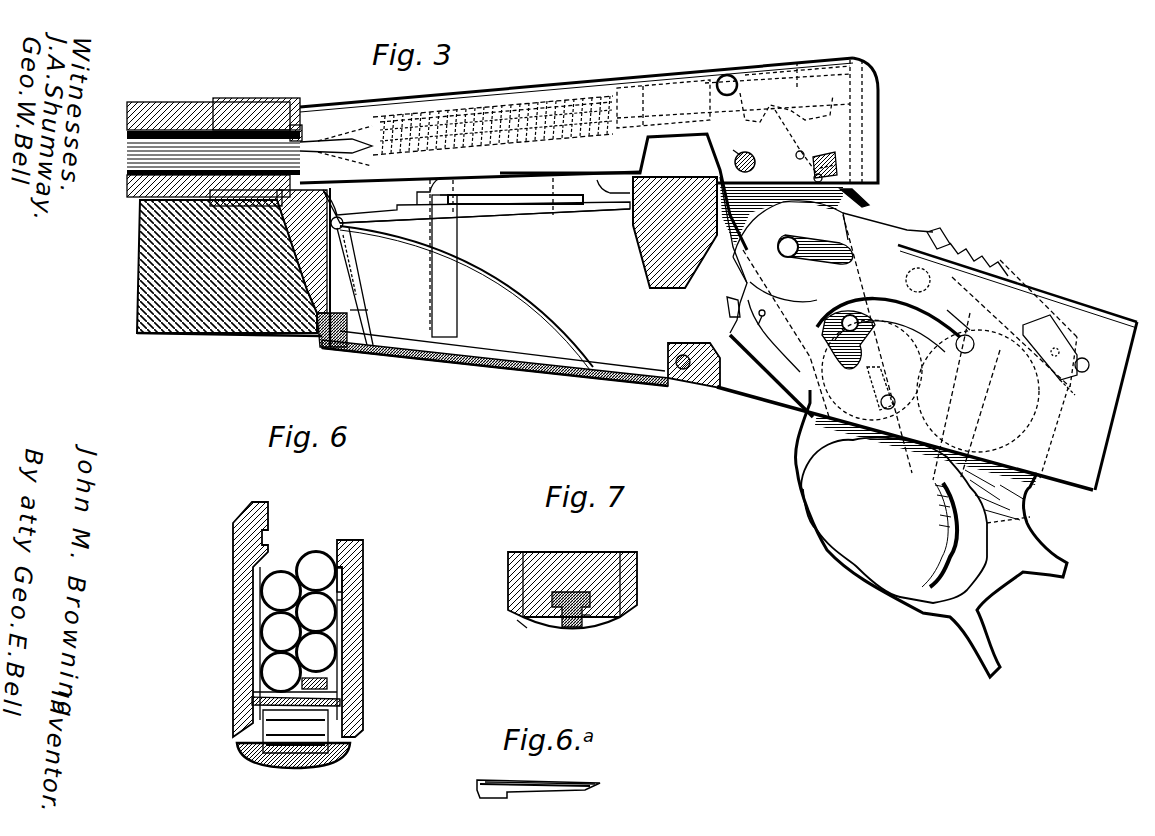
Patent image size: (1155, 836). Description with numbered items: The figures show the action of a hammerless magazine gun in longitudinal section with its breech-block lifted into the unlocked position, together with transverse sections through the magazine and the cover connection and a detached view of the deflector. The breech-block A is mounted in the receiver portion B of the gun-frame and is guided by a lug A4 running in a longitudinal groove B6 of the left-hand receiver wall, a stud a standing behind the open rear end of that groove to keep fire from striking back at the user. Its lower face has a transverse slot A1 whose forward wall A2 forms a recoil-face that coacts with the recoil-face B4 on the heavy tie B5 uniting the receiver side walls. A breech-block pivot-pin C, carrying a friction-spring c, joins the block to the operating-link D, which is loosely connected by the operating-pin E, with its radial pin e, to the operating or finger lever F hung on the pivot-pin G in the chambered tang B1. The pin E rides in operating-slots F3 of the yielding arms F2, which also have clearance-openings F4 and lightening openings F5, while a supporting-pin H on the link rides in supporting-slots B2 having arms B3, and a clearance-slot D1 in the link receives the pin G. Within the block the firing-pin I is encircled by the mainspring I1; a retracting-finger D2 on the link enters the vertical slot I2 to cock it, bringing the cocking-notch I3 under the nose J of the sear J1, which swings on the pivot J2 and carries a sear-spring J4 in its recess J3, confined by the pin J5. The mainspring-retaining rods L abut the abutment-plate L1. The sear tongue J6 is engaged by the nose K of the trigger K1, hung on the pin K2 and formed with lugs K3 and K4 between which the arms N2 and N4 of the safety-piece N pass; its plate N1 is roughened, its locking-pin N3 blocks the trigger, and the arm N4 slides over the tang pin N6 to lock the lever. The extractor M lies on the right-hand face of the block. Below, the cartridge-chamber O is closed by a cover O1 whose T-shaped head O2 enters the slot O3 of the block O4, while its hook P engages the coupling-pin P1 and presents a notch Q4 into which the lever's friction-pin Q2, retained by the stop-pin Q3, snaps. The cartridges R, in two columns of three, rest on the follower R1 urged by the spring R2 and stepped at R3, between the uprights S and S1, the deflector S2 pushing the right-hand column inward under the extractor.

In FIG. 3, the extractor M is at (299, 99).
In FIG. 3, the breech-block A is at (524, 95).
In FIG. 3, the transverse slot A1 is at (623, 192).
In FIG. 3, the forward wall of transverse slot A2 is at (640, 157).
In FIG. 3, the guide lug A4 is at (315, 150).
In FIG. 3, the firing-pin I is at (466, 108).
In FIG. 3, the mainspring I1 is at (430, 112).
In FIG. 3, the vertical slot of firing-pin I2 is at (688, 82).
In FIG. 3, the cocking-notch I3 is at (800, 120).
In FIG. 3, the retracting-finger D2 is at (733, 108).
In FIG. 3, the stud or projection a is at (728, 75).
In FIG. 3, the mainspring-retaining rods L is at (790, 80).
In FIG. 3, the abutment-plate L1 is at (858, 62).
In FIG. 3, the nose of sear J is at (845, 120).
In FIG. 3, the sear J1 is at (837, 160).
In FIG. 3, the sear pivot J2 is at (800, 151).
In FIG. 3, the circular recess of sear J3 is at (812, 175).
In FIG. 3, the sear-spring J4 is at (840, 170).
In FIG. 3, the sear-spring pin J5 is at (880, 185).
In FIG. 3, the tongue of sear J6 is at (869, 202).
In FIG. 3, the breech-block pivot-pin C is at (750, 155).
In FIG. 3, the friction-spring c is at (731, 145).
In FIG. 3, the radial pin e is at (780, 238).
In FIG. 3, the operating-pin E is at (790, 242).
In FIG. 3, the receiver portion of gun-frame B is at (476, 254).
In FIG. 6, the receiver portion of gun-frame B is at (363, 633).
In FIG. 7, the receiver portion of gun-frame B is at (505, 572).
In FIG. 3, the chambered tang B1 is at (1060, 433).
In FIG. 3, the supporting-slots B2 is at (904, 318).
In FIG. 3, the arms of supporting-slots B3 is at (868, 345).
In FIG. 3, the recoil-face B4 is at (617, 185).
In FIG. 3, the tie B5 is at (650, 248).
In FIG. 6, the longitudinal groove B6 is at (230, 540).
In FIG. 3, the operating-link D is at (726, 255).
In FIG. 3, the clearance-slot D1 is at (882, 380).
In FIG. 3, the operating or finger lever F is at (1015, 505).
In FIG. 3, the yielding arms of operating-lever F2 is at (775, 314).
In FIG. 3, the operating-slots F3 is at (875, 218).
In FIG. 3, the clearance-openings F4 is at (880, 318).
In FIG. 3, the lightening openings F5 is at (958, 320).
In FIG. 3, the operating-lever pivot-pin G is at (881, 402).
In FIG. 3, the supporting-pin H is at (853, 315).
In FIG. 3, the nose of trigger K is at (905, 233).
In FIG. 3, the trigger K1 is at (990, 405).
In FIG. 3, the trigger pin K2 is at (1060, 352).
In FIG. 3, the rear lug of trigger K3 is at (1060, 352).
In FIG. 3, the forward lug of trigger K4 is at (948, 237).
In FIG. 3, the safety-piece N is at (1040, 295).
In FIG. 3, the plate of safety-piece N1 is at (978, 255).
In FIG. 3, the depending arm of safety-piece N2 is at (1005, 275).
In FIG. 3, the locking-pin N3 is at (906, 283).
In FIG. 3, the rearwardly-extending arm of safety-piece N4 is at (1078, 390).
In FIG. 3, the tang pin N6 is at (1089, 365).
In FIG. 3, the cartridge-chamber O is at (495, 351).
In FIG. 6, the cartridge-chamber O is at (262, 655).
In FIG. 3, the cover O1 is at (515, 370).
In FIG. 6, the cover O1 is at (290, 768).
In FIG. 7, the cover O1 is at (572, 630).
In FIG. 3, the T-shaped retaining-head O2 is at (354, 315).
In FIG. 7, the T-shaped retaining-head O2 is at (522, 630).
In FIG. 3, the slot of block O3 is at (350, 295).
In FIG. 7, the slot of block O3 is at (597, 612).
In FIG. 3, the block O4 is at (345, 255).
In FIG. 7, the block O4 is at (572, 552).
In FIG. 3, the hook P is at (686, 343).
In FIG. 3, the coupling-pin P1 is at (676, 362).
In FIG. 3, the friction-pin Q2 is at (733, 300).
In FIG. 3, the stop-pin Q3 is at (761, 326).
In FIG. 3, the notch of hook Q4 is at (722, 368).
In FIG. 6, the cartridges R is at (299, 622).
In FIG. 3, the follower R1 is at (560, 200).
In FIG. 6, the follower R1 is at (255, 702).
In FIG. 3, the follower spring R2 is at (527, 294).
In FIG. 6, the follower spring R2 is at (310, 740).
In FIG. 3, the step of follower R3 is at (512, 186).
In FIG. 6, the step of follower R3 is at (327, 683).
In FIG. 3, the upright S is at (440, 285).
In FIG. 6, the upright S is at (250, 600).
In FIG. 6A, the upright S is at (485, 796).
In FIG. 6, the upright S1 is at (345, 600).
In FIG. 3, the deflector S2 is at (470, 257).
In FIG. 6, the deflector S2 is at (342, 580).
In FIG. 6A, the deflector S2 is at (540, 771).
In FIG. 3, the stock pin d is at (340, 347).